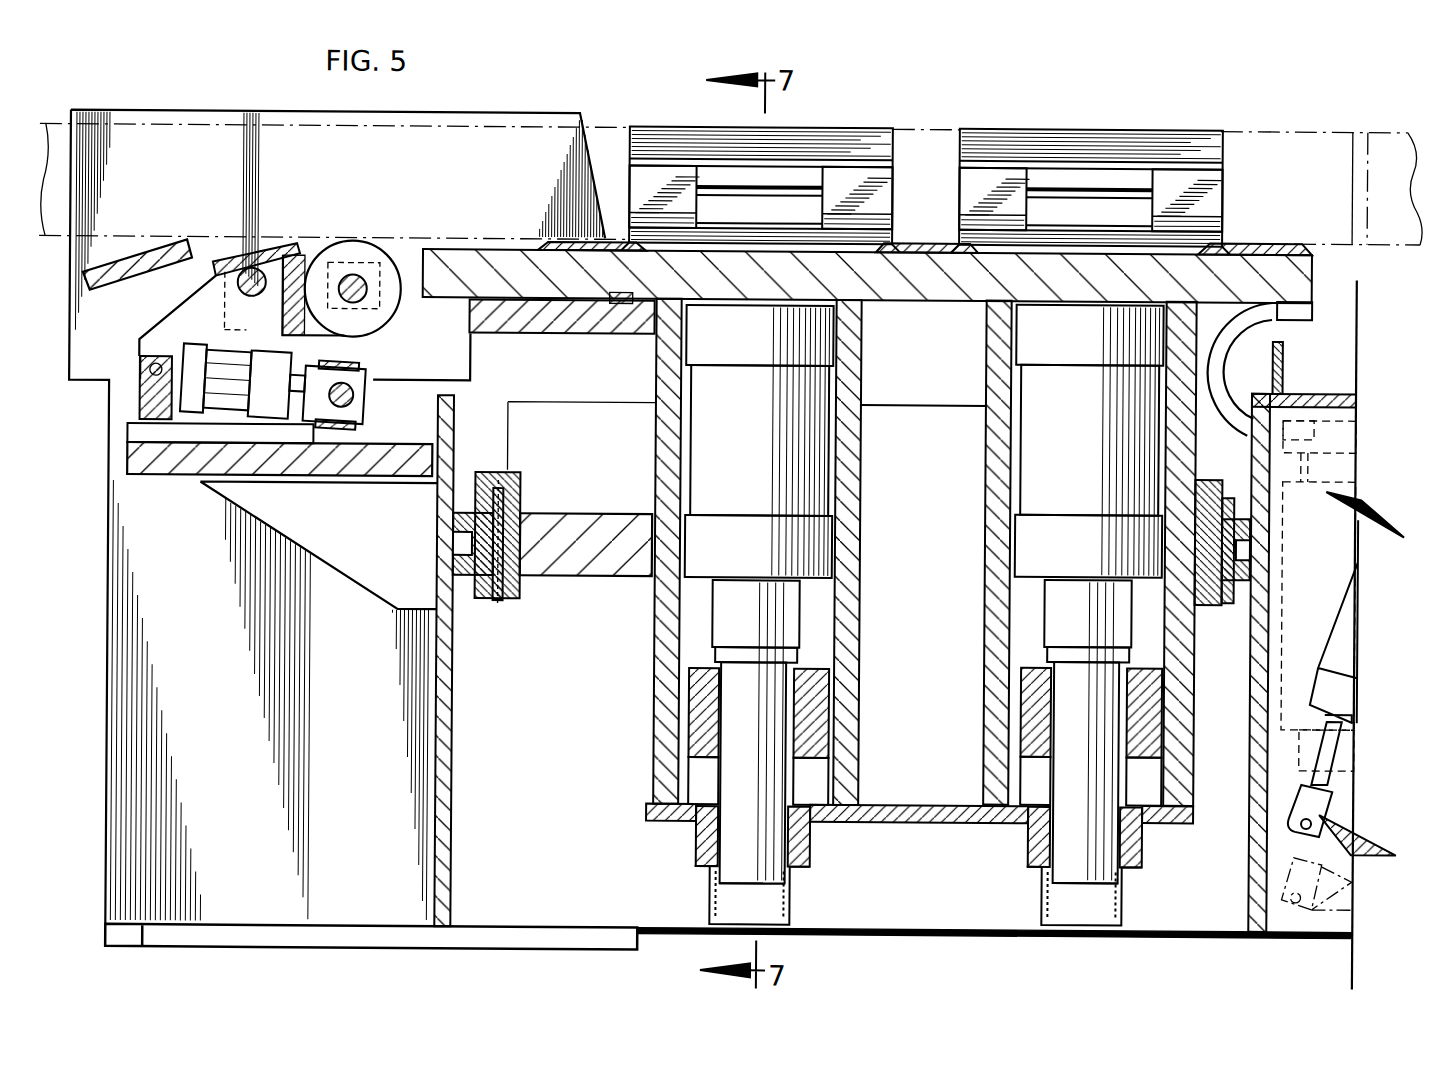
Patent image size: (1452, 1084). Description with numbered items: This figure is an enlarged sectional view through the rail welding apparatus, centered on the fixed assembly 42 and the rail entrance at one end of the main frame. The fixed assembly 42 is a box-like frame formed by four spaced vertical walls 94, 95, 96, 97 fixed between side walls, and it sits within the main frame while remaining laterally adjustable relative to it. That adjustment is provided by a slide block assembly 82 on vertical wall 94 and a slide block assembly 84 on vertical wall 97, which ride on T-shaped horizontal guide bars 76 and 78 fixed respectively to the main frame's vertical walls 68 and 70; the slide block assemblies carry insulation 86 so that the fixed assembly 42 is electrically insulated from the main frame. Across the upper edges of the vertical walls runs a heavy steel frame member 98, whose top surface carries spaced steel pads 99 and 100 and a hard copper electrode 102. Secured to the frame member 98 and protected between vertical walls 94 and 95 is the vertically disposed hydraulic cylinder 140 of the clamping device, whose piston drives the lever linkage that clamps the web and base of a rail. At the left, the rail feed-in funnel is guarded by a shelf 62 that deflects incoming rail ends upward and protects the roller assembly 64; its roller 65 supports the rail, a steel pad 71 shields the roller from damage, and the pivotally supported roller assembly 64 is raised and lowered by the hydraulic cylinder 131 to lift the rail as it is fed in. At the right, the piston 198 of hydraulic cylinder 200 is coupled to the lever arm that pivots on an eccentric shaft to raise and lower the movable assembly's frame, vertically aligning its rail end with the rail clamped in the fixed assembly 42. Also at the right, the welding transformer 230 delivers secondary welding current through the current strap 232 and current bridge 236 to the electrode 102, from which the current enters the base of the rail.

The shelf 62 is at (113, 292).
The roller assembly 64 is at (295, 230).
The roller 65 is at (362, 243).
The steel pad 71 is at (238, 258).
The hydraulic cylinder 131 is at (219, 394).
The T-shaped horizontal guide bar 76 is at (463, 540).
The slide block assembly 82 is at (500, 467).
The insulation 86 is at (503, 598).
The vertical wall 94 is at (660, 691).
The vertical wall 68 is at (457, 851).
The steel pad 99 is at (586, 251).
The steel pad 100 is at (903, 249).
The heavy steel frame member 98 is at (936, 297).
The hard copper electrode 102 is at (1262, 240).
The current bridge 236 is at (1308, 318).
The current strap 232 is at (1217, 345).
The slide block assembly 84 is at (1210, 460).
The hydraulic cylinder 140 is at (770, 447).
The fixed assembly 42 is at (945, 536).
The vertical wall 95 is at (853, 653).
The vertical wall 96 is at (992, 697).
The vertical wall 97 is at (1183, 744).
The T-shaped horizontal guide bar 78 is at (1239, 547).
The welding transformer 230 is at (1289, 650).
The hydraulic cylinder 200 is at (1348, 658).
The piston 198 is at (1330, 738).
The vertical wall 70 is at (1255, 867).